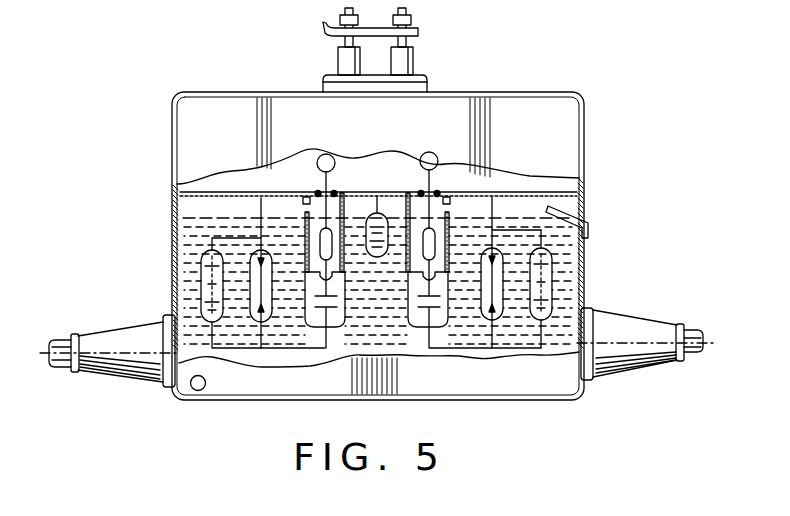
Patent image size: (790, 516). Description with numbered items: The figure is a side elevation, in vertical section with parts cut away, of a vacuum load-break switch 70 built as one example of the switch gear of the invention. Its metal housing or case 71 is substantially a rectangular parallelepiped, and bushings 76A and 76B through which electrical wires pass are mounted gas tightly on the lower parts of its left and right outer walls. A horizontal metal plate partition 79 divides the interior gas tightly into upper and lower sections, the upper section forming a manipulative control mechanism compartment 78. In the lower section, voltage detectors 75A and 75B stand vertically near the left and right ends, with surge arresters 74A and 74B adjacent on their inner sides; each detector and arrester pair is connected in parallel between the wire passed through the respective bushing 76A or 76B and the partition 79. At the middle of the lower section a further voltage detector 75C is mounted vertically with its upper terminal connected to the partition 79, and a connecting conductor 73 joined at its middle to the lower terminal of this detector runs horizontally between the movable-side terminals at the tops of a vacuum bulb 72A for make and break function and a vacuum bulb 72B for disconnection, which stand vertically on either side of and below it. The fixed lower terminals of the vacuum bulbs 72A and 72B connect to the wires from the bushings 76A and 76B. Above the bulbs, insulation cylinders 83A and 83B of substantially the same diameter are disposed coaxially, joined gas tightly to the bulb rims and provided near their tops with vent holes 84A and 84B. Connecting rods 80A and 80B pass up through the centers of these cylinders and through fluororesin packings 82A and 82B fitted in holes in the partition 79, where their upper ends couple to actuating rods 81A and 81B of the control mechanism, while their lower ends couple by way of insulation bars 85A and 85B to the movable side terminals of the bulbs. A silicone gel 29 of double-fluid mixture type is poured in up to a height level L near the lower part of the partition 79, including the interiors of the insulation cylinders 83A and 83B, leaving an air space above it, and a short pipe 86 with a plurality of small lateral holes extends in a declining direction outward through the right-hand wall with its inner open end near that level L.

The vacuum load-break switch 70 is at (466, 28).
The metal housing or case 71 is at (492, 90).
The manipulative control mechanism compartment 78 is at (237, 122).
The horizontal metal plate partition 79 is at (545, 190).
The short pipe 86 is at (591, 223).
The silicone gel 29 is at (172, 262).
The height level L is at (174, 213).
The bushing 76A is at (115, 336).
The bushing 76B is at (631, 323).
The connecting rod 80A is at (316, 170).
The connecting rod 80B is at (420, 167).
The actuating rod 81A is at (327, 154).
The actuating rod 81B is at (435, 156).
The packing 82A is at (334, 191).
The packing 82B is at (437, 191).
The insulation cylinder 83A is at (304, 214).
The insulation cylinder 83B is at (452, 215).
The vent hole 84A is at (305, 205).
The vent hole 84B is at (452, 204).
The insulation bar 85A is at (320, 248).
The insulation bar 85B is at (420, 252).
The voltage detector 75C is at (388, 216).
The connecting conductor 73 is at (360, 262).
The vacuum bulb for make and break function 72A is at (343, 329).
The vacuum bulb for disconnection 72B is at (413, 337).
The surge arrester 74A is at (278, 275).
The surge arrester 74B is at (492, 272).
The voltage detector 75A is at (218, 319).
The voltage detector 75B is at (530, 316).